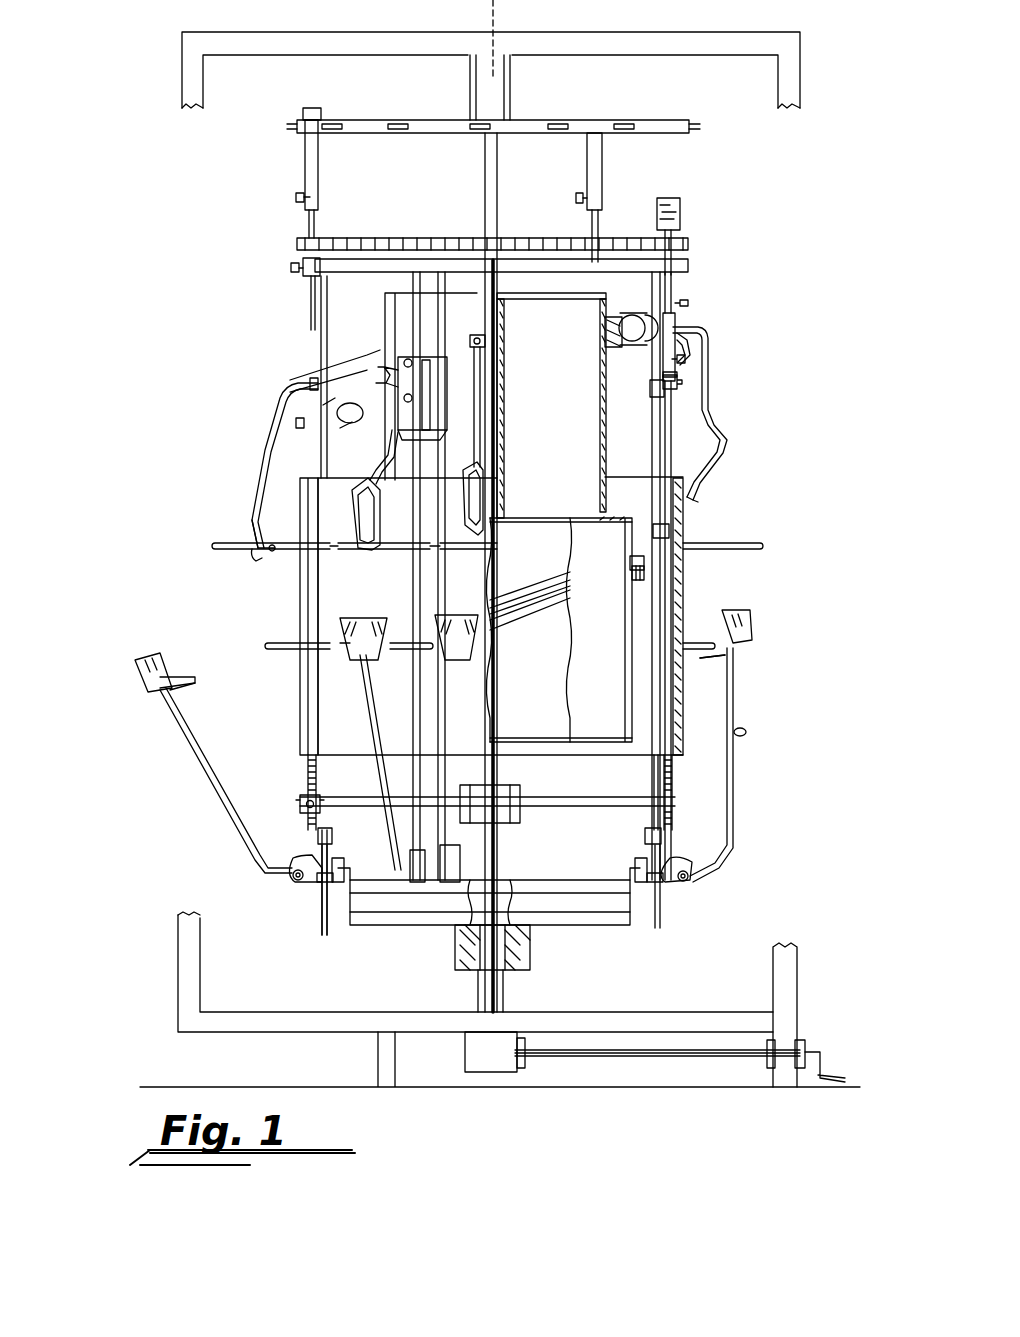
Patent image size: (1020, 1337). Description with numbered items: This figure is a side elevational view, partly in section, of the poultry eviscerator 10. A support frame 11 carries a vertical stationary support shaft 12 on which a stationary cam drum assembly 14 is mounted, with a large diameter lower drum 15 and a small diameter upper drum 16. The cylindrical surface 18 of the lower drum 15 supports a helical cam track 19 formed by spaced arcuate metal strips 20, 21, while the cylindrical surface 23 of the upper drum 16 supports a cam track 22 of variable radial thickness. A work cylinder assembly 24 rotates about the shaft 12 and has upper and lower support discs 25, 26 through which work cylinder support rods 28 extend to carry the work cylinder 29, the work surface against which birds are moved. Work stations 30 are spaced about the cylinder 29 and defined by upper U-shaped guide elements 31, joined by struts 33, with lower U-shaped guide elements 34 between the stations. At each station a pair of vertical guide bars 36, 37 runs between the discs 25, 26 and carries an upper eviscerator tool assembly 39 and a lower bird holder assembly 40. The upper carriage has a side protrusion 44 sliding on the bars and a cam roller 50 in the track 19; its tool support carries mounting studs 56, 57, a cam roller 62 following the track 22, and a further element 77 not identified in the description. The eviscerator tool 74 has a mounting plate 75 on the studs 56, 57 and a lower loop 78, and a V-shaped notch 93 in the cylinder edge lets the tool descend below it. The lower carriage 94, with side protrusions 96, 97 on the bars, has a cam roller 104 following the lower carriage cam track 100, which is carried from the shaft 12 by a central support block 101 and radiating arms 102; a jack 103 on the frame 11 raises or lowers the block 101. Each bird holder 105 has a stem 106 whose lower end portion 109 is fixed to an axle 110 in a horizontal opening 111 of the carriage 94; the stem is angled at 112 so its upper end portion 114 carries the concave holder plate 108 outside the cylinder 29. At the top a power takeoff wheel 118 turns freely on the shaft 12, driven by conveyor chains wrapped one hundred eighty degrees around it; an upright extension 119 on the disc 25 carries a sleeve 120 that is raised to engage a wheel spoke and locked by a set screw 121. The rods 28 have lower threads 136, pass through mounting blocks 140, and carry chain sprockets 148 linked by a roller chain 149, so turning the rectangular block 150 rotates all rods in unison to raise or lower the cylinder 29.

The poultry eviscerator 10 is at (841, 194).
The support frame 11 is at (752, 45).
The vertical stationary support shaft 12 is at (497, 175).
The stationary cam drum assembly 14 is at (619, 282).
The large diameter lower drum 15 is at (600, 742).
The small diameter upper drum 16 is at (606, 440).
The cylindrical surface 18 is at (308, 572).
The continuous cam track 19 is at (504, 598).
The arcuate metal strip 20 is at (530, 605).
The arcuate metal strip 21 is at (534, 596).
The continuous cam track 22 is at (398, 380).
The cylindrical surface 23 is at (395, 308).
The work cylinder assembly 24 is at (700, 262).
The upper support disc 25 is at (556, 258).
The lower support disc 26 is at (582, 806).
The work cylinder support rod 28 is at (311, 312).
The work cylinder 29 is at (300, 710).
The work station 30 is at (263, 400).
The upper U-shaped guide element 31 is at (222, 543).
The strut 33 is at (320, 543).
The lower U-shaped guide element 34 is at (325, 643).
The vertical guide bar 36 is at (433, 272).
The vertical guide bar 37 is at (416, 272).
The eviscerator tool assembly 39 is at (722, 324).
The bird holder assembly 40 is at (753, 818).
The upper side protrusion 44 is at (650, 392).
The cam roller 50 is at (632, 574).
The tool mounting stud 56 is at (688, 358).
The tool mounting stud 57 is at (688, 305).
The cam roller 62 is at (620, 328).
The eviscerator tool 74 is at (262, 460).
The mounting plate 75 is at (690, 373).
The spring wire 77 is at (700, 355).
The lower loop 78 is at (465, 498).
The V-shaped notch 93 is at (398, 488).
The lower carriage 94 is at (305, 858).
The upper side protrusion 96 is at (332, 836).
The lower side protrusion 97 is at (322, 882).
The lower carriage cam track 100 is at (325, 932).
The central support block 101 is at (530, 948).
The radiating arms 102 is at (602, 925).
The jack 103 is at (500, 1068).
The cam roller 104 is at (344, 868).
The bird holder 105 is at (178, 782).
The stem 106 is at (380, 720).
The holder plate 108 is at (367, 618).
The lower end portion 109 is at (290, 875).
The axle 110 is at (296, 880).
The horizontal opening 111 is at (685, 865).
The angle of stem 112 is at (255, 862).
The upper end portion 114 is at (205, 690).
The power takeoff wheel 118 is at (628, 120).
The upright extension 119 is at (598, 225).
The sleeve 120 is at (602, 170).
The set screw 121 is at (576, 198).
The threads 136 is at (308, 778).
The mounting block 140 is at (675, 530).
The chain sprocket 148 is at (690, 240).
The continuous roller chain 149 is at (510, 238).
The rectangular block 150 is at (682, 203).